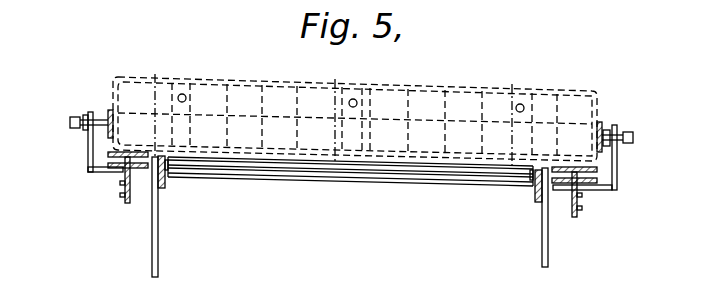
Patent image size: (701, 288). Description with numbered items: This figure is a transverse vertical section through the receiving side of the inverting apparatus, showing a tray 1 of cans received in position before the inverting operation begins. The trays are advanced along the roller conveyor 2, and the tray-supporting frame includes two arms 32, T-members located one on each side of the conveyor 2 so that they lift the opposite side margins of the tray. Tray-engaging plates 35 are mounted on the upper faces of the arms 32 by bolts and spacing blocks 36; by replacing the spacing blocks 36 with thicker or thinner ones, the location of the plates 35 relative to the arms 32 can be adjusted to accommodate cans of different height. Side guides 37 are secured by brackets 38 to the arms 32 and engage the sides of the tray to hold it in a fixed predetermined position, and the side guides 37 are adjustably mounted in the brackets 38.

The casing 1 is at (599, 103).
The conveyor 2 is at (323, 176).
The arms 32 is at (123, 184).
The tray-engaging plates 35 is at (110, 153).
The spacing blocks 36 is at (110, 165).
The side guides 37 is at (110, 110).
The brackets 38 is at (88, 133).